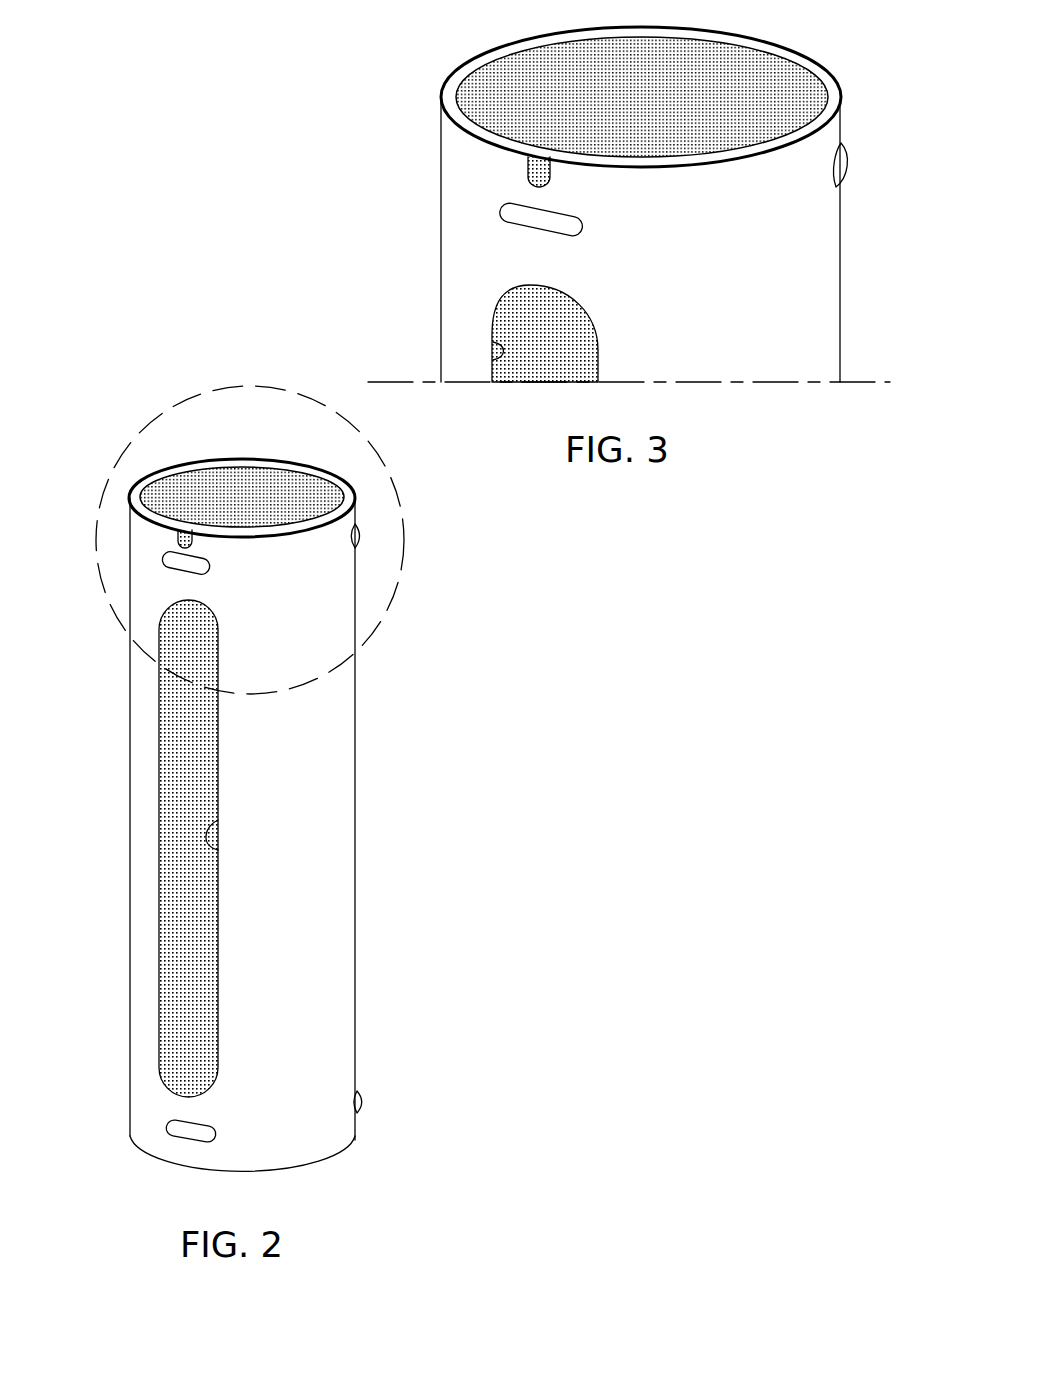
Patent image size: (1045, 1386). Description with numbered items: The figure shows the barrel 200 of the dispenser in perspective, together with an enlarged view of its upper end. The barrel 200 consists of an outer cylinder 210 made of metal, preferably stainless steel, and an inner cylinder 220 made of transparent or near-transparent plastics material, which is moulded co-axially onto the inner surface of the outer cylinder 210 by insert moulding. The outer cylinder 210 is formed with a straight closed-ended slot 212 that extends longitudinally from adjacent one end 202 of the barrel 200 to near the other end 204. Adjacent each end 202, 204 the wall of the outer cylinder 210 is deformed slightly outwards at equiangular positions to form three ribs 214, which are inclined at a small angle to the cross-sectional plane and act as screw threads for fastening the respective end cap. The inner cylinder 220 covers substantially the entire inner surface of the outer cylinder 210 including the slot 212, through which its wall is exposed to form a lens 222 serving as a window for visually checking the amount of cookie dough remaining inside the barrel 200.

In FIG. 3, the barrel 200 is at (412, 238).
In FIG. 2, the barrel 200 is at (390, 731).
In FIG. 3, the end of the barrel 202 is at (797, 223).
In FIG. 2, the end of the barrel 202 is at (337, 572).
In FIG. 2, the end of the barrel 204 is at (324, 1141).
In FIG. 3, the outer cylinder 210 is at (441, 99).
In FIG. 2, the outer cylinder 210 is at (356, 836).
In FIG. 3, the slot 212 is at (502, 358).
In FIG. 2, the slot 212 is at (222, 848).
In FIG. 3, the ribs 214 is at (520, 216).
In FIG. 2, the ribs 214 is at (360, 533).
In FIG. 3, the inner cylinder 220 is at (458, 72).
In FIG. 2, the inner cylinder 220 is at (255, 496).
In FIG. 3, the lens 222 is at (570, 358).
In FIG. 2, the lens 222 is at (182, 944).